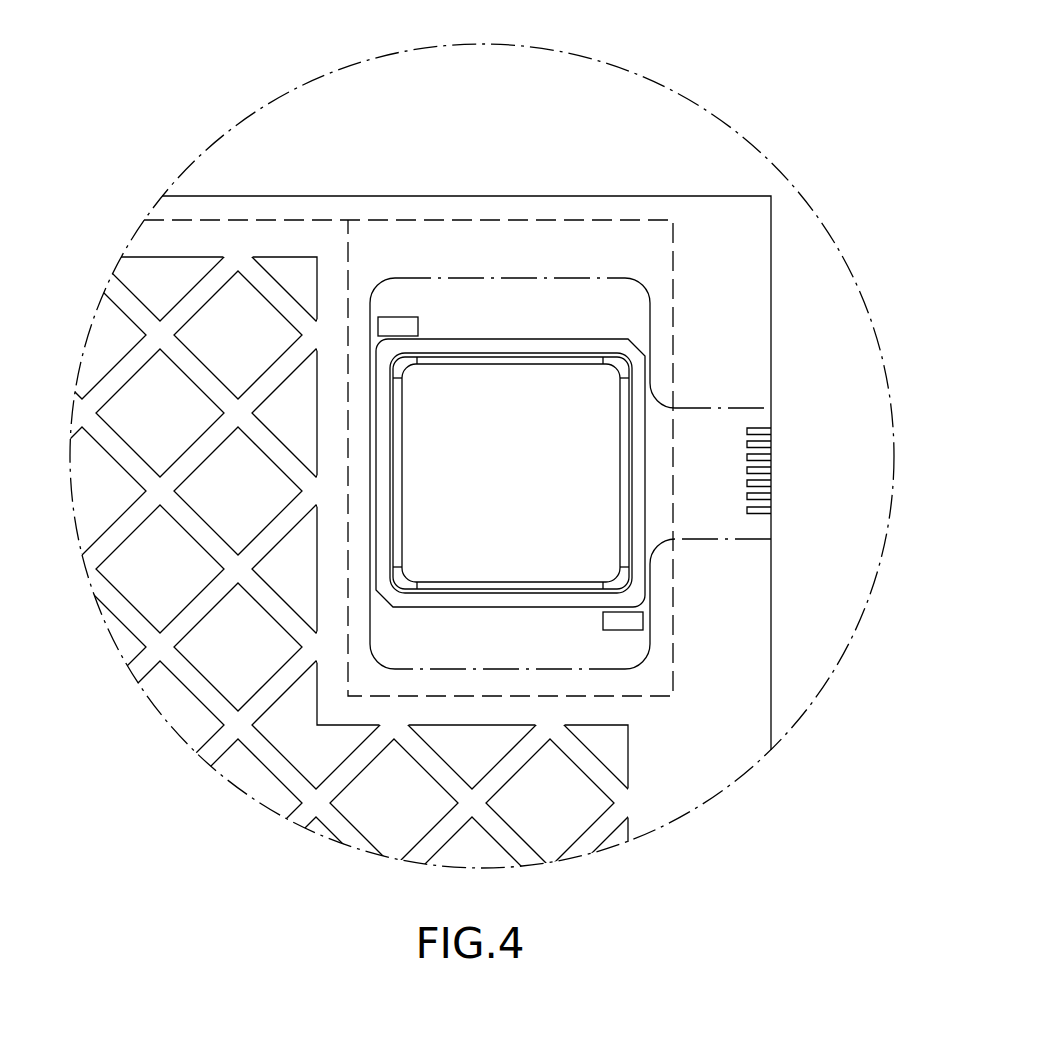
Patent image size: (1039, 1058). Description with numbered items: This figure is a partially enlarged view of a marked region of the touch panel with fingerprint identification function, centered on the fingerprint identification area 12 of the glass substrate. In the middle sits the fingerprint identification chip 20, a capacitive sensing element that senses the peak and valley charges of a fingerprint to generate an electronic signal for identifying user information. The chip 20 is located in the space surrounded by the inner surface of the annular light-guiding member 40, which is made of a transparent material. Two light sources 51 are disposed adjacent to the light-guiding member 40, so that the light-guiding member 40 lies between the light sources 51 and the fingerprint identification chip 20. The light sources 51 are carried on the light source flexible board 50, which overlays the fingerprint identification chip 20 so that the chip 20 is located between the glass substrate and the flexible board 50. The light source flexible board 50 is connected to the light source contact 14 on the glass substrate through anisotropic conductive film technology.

The fingerprint identification area 12 is at (615, 218).
The light source contact 14 is at (758, 461).
The fingerprint identification chip 20 is at (579, 408).
The light-guiding member 40 is at (507, 340).
The light source flexible board 50 is at (655, 297).
The light source 51 is at (397, 322).